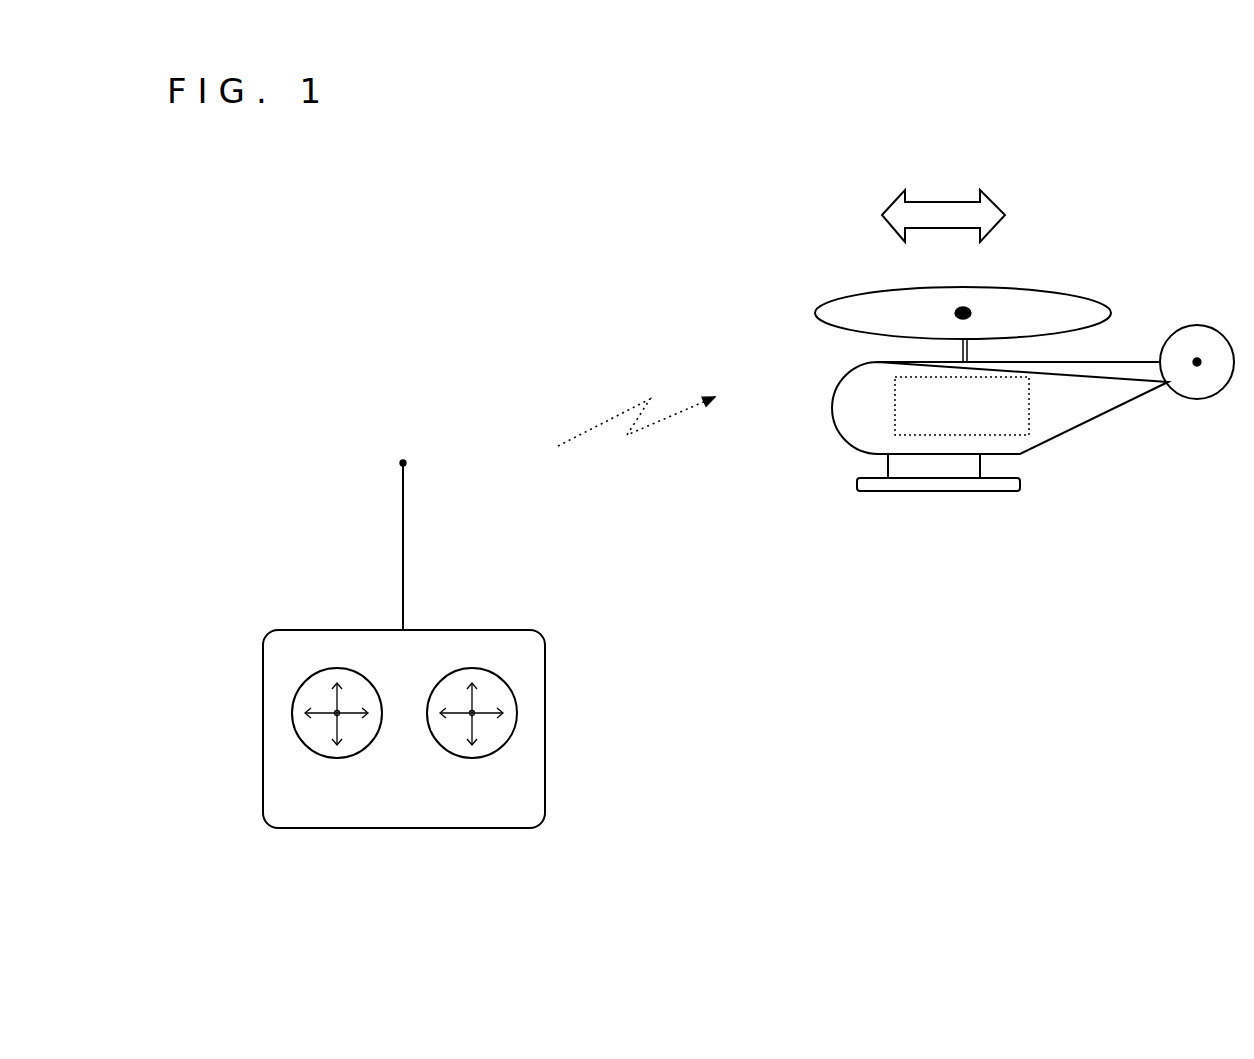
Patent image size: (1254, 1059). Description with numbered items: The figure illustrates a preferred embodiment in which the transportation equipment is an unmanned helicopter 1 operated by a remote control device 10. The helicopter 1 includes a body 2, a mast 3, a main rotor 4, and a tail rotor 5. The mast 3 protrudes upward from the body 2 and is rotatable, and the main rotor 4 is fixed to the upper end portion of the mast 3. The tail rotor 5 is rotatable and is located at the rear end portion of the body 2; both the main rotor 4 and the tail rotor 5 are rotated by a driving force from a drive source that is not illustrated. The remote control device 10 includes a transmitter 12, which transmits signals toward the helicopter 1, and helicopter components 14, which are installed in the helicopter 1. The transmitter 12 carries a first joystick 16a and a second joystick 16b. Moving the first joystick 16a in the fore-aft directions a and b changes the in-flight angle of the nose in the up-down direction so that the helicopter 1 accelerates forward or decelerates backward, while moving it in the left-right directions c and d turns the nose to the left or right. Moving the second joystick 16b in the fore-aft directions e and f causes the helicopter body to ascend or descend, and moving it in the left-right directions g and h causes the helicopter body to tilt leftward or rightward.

The unmanned helicopter 1 is at (1100, 287).
The body 2 is at (1078, 425).
The mast 3 is at (962, 351).
The main rotor 4 is at (836, 298).
The tail rotor 5 is at (1223, 389).
The remote control device 10 is at (444, 376).
The transmitter 12 is at (268, 635).
The helicopter components 14 is at (895, 400).
The first joystick 16a is at (335, 711).
The second joystick 16b is at (474, 711).